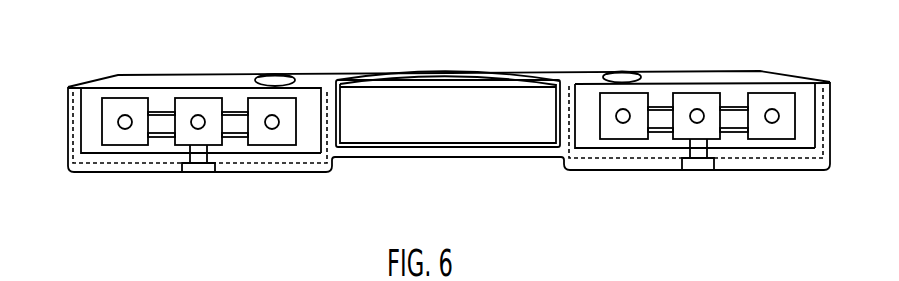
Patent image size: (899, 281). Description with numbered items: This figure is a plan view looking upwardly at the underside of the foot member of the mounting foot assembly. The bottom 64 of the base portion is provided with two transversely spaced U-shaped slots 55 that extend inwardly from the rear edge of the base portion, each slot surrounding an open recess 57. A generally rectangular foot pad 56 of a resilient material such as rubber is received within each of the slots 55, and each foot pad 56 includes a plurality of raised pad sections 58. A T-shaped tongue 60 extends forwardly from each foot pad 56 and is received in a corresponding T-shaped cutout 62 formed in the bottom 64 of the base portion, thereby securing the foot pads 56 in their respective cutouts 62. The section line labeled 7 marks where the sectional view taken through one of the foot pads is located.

The U-shaped slot 55 is at (265, 163).
The foot pad 56 is at (157, 148).
The open recess 57 is at (318, 110).
The raised pad section 58 is at (132, 107).
The T-shaped tongue 60 is at (202, 172).
The T-shaped cutout 62 is at (197, 170).
The bottom 64 is at (360, 152).
The section line 7- 7 is at (697, 65).